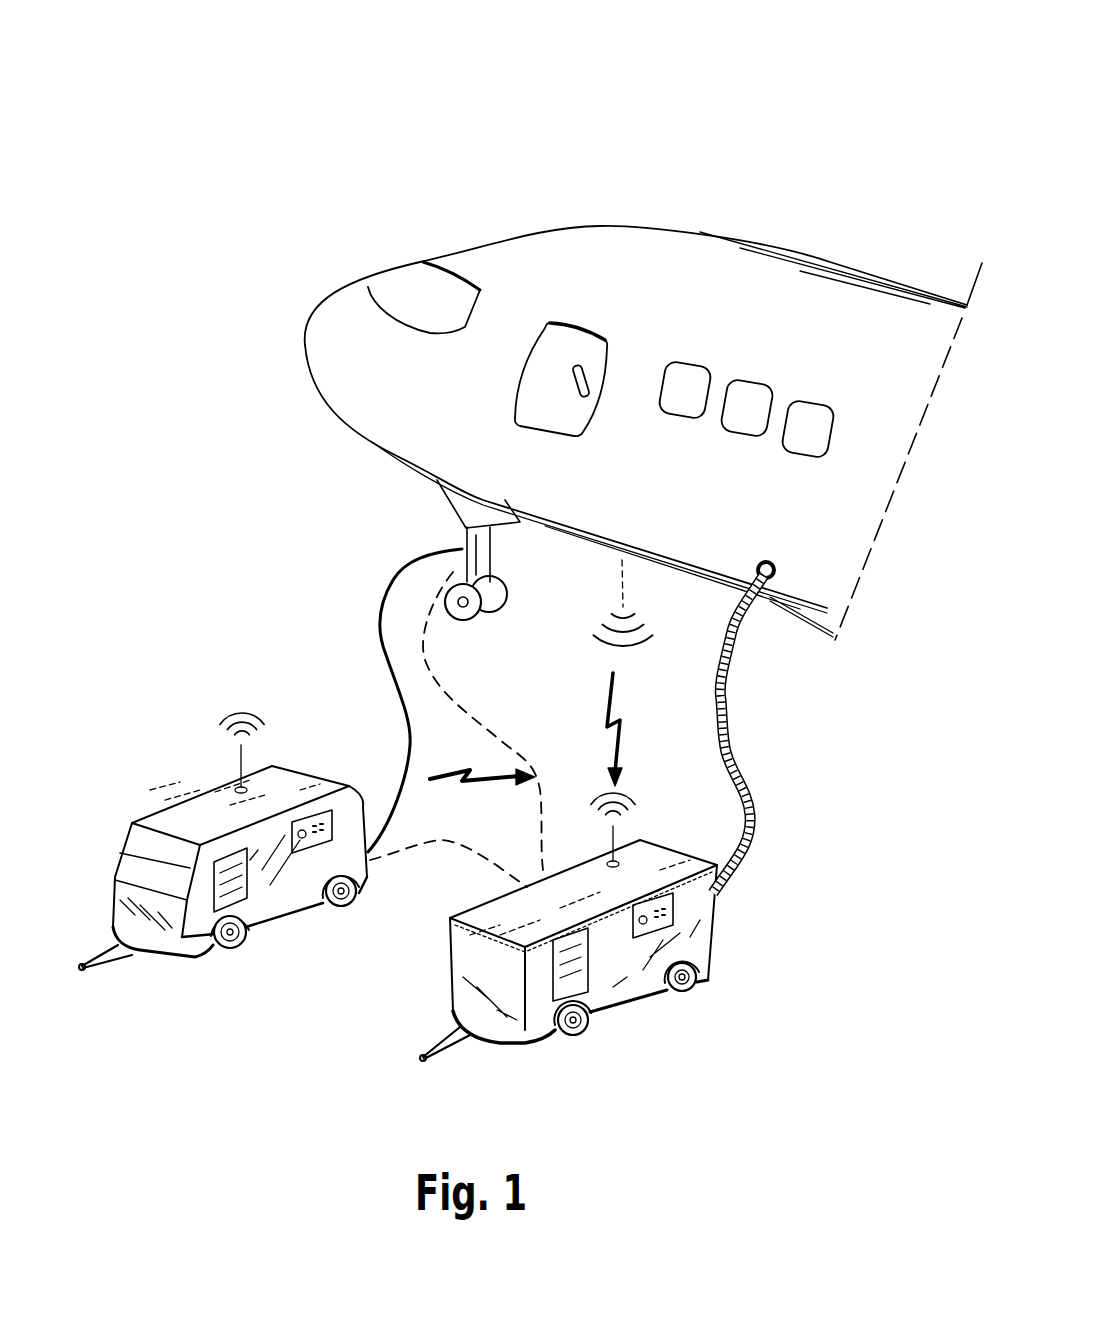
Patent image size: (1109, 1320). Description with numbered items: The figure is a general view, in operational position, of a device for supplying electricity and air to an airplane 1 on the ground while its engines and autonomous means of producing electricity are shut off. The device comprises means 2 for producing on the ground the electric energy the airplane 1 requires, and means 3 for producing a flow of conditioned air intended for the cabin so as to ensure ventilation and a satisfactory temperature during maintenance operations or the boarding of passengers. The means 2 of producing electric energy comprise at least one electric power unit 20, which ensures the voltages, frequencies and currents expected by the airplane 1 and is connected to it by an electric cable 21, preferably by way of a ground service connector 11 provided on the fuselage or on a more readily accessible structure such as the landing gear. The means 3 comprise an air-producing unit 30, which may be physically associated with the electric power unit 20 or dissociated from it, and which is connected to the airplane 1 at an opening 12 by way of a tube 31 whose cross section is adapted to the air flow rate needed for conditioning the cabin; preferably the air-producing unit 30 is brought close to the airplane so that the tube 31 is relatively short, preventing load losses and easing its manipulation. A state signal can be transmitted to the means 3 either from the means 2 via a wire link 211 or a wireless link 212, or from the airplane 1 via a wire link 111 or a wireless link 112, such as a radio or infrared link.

The airplane 1 is at (722, 142).
The ground service connector 11 is at (458, 547).
The wire link 111 is at (517, 747).
The wireless link 112 is at (633, 730).
The opening 12 is at (764, 560).
The means for producing electric energy 2 is at (205, 770).
The electric power unit 20 is at (273, 907).
The electric cable 21 is at (404, 750).
The wire link 211 is at (414, 856).
The wireless link 212 is at (453, 782).
The means for producing a flow of conditioned air 3 is at (424, 968).
The air-producing unit 30 is at (702, 947).
The tube 31 is at (740, 752).